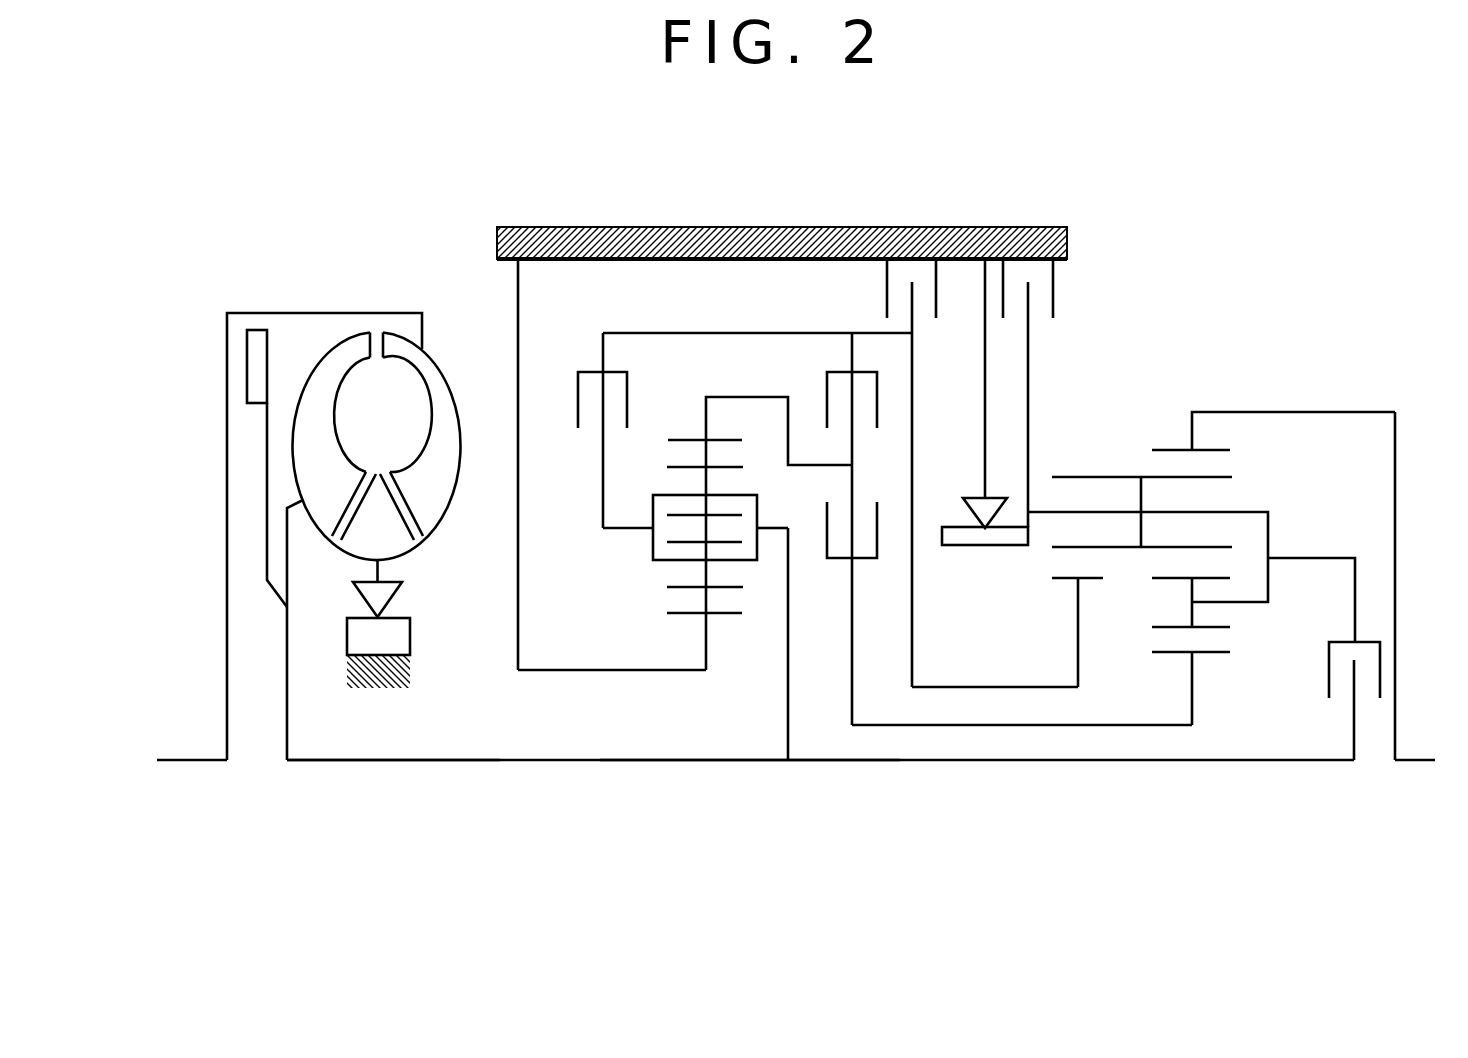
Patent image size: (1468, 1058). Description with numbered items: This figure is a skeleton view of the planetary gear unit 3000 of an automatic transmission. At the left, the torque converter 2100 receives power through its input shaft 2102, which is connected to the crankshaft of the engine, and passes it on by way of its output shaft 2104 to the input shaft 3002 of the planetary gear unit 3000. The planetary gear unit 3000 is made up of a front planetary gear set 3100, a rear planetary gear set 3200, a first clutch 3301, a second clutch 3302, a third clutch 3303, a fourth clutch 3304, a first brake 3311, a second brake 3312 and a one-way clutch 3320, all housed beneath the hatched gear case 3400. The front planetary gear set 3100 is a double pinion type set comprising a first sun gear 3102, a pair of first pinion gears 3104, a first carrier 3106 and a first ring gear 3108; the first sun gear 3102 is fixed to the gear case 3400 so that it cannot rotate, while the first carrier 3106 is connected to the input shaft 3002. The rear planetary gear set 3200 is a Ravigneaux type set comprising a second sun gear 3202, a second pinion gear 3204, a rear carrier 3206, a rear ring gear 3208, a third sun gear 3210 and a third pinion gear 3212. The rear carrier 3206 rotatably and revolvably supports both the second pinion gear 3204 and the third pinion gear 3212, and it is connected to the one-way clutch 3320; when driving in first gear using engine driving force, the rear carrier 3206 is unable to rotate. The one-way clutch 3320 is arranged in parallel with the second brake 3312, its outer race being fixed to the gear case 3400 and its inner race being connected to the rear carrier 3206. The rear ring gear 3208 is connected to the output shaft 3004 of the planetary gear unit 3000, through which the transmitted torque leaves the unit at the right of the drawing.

The torque converter 2100 is at (364, 272).
The input shaft 2102 is at (182, 762).
The torque converter output shaft 2104 is at (355, 762).
The planetary gear unit 3000 is at (870, 193).
The input shaft 3002 is at (765, 762).
The output shaft 3004 is at (1413, 765).
The front planetary gear set 3100 is at (598, 545).
The first sun gear 3102 is at (722, 615).
The first pinion gears 3104 is at (665, 467).
The first carrier 3106 is at (653, 542).
The first ring gear 3108 is at (690, 440).
The rear planetary gear set 3200 is at (1233, 354).
The second sun gear 3202 is at (1070, 578).
The second pinion gear 3204 is at (1102, 475).
The rear carrier 3206 is at (1252, 512).
The rear ring gear 3208 is at (1170, 445).
The third sun gear 3210 is at (1167, 648).
The third pinion gear 3212 is at (1218, 628).
The C1 clutch 3301 is at (862, 575).
The C2 clutch 3302 is at (1328, 668).
The C3 clutch 3303 is at (827, 390).
The C4 clutch 3304 is at (593, 370).
The B1 brake 3311 is at (885, 282).
The B2 brake 3312 is at (1055, 278).
The one-way clutch 3320 is at (955, 548).
The gear case 3400 is at (705, 227).